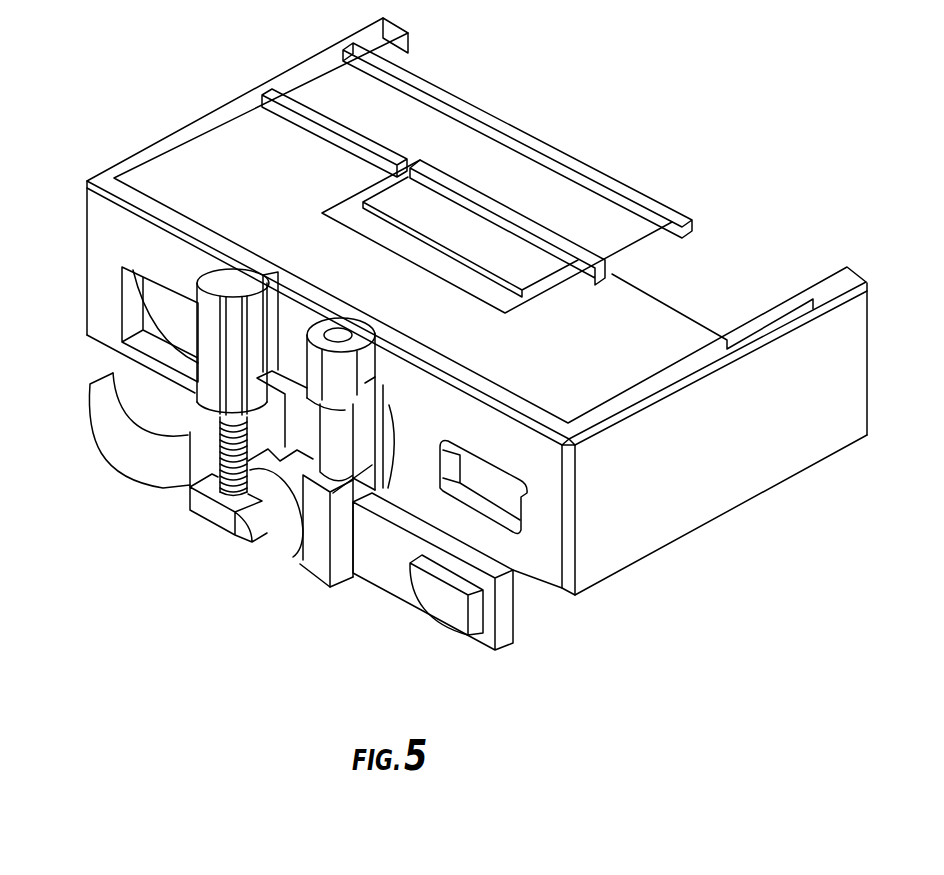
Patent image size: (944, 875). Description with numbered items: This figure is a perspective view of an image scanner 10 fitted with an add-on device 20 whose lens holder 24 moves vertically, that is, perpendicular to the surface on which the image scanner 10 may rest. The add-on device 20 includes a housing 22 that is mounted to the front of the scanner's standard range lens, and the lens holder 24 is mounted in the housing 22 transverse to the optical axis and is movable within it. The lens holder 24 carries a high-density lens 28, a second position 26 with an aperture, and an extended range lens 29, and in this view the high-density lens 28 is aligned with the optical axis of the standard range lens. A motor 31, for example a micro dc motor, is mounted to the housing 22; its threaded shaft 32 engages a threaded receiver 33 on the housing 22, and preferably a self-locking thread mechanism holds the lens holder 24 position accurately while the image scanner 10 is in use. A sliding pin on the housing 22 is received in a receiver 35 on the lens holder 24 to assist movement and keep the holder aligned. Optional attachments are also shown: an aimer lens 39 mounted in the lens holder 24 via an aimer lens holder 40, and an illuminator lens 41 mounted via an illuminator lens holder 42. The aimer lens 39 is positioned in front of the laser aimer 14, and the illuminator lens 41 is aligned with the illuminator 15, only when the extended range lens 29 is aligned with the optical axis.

The image scanner 10 is at (760, 412).
The laser aimer 14 is at (488, 500).
The illuminator 15 is at (172, 316).
The add-on device 20 is at (150, 572).
The housing 22 is at (368, 320).
The lens holder 24 is at (277, 410).
The second position 26 is at (293, 492).
The high-density lens 28 is at (308, 415).
The extended range lens 29 is at (277, 528).
The motor 31 is at (233, 274).
The threaded shaft 32 is at (213, 437).
The threaded receiver 33 is at (205, 531).
The receiver 35 is at (327, 588).
The aimer lens 39 is at (463, 636).
The aimer lens holder 40 is at (390, 588).
The illuminator lens 41 is at (125, 440).
The illuminator lens holder 42 is at (196, 463).